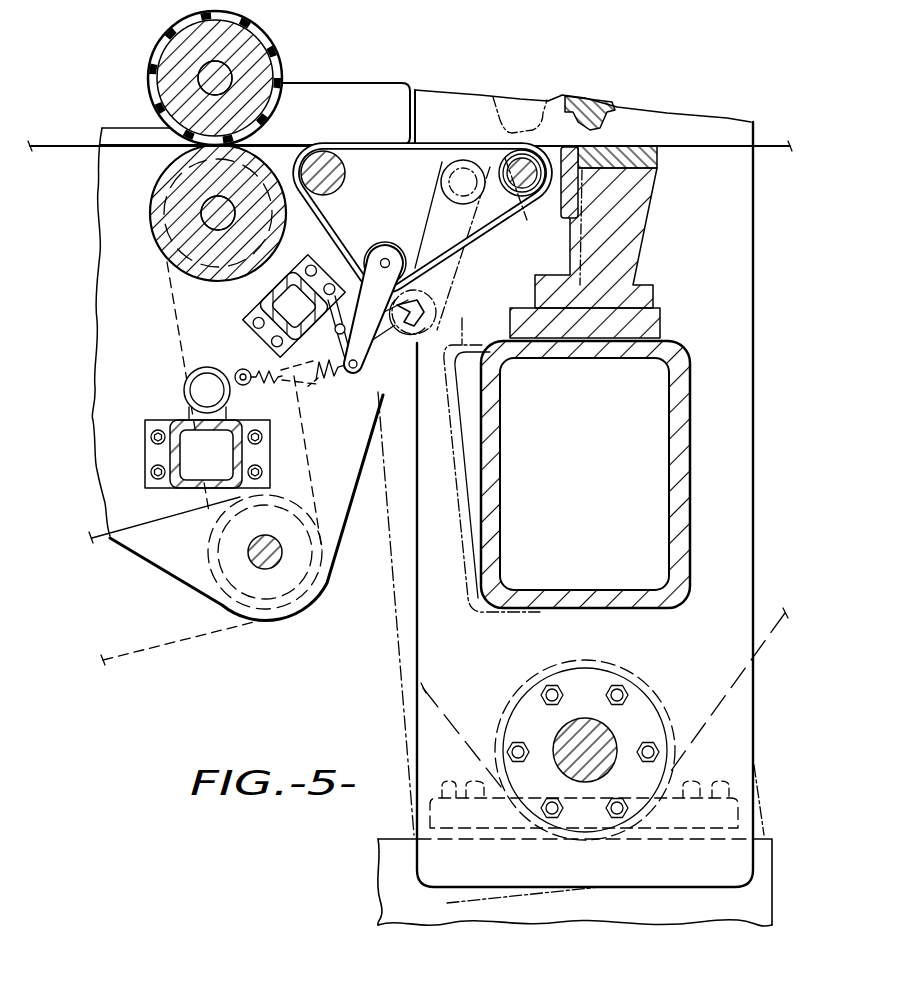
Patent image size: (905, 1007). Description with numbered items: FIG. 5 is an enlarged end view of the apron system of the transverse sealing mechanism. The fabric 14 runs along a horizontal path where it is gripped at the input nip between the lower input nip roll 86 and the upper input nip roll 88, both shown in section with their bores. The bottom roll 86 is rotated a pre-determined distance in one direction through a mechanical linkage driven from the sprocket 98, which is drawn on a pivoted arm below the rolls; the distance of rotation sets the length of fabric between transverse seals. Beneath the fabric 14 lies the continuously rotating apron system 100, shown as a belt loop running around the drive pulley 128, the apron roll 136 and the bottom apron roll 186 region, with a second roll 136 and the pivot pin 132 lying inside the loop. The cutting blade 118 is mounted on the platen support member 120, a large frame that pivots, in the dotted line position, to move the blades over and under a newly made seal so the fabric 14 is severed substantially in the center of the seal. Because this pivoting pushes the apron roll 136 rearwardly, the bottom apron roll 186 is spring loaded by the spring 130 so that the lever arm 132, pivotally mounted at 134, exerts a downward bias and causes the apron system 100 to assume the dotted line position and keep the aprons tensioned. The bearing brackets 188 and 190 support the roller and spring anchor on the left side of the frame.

The fabric 14 is at (74, 146).
The input nip roll 86 is at (160, 180).
The input nip roll 88 is at (160, 46).
The sprocket 98 is at (205, 571).
The apron system 100 is at (491, 241).
The cutting blade 118 is at (650, 158).
The platen support member 120 is at (754, 268).
The drive pulley 128 is at (346, 176).
The spring 130 is at (326, 378).
The lever arm 132 is at (391, 238).
The pivot mounting of lever arm 134 is at (386, 325).
The apron roll 136 is at (516, 158).
The bottom apron roll 186 is at (345, 246).
The bearing bracket 188 is at (185, 383).
The spring anchor ring 190 is at (240, 369).